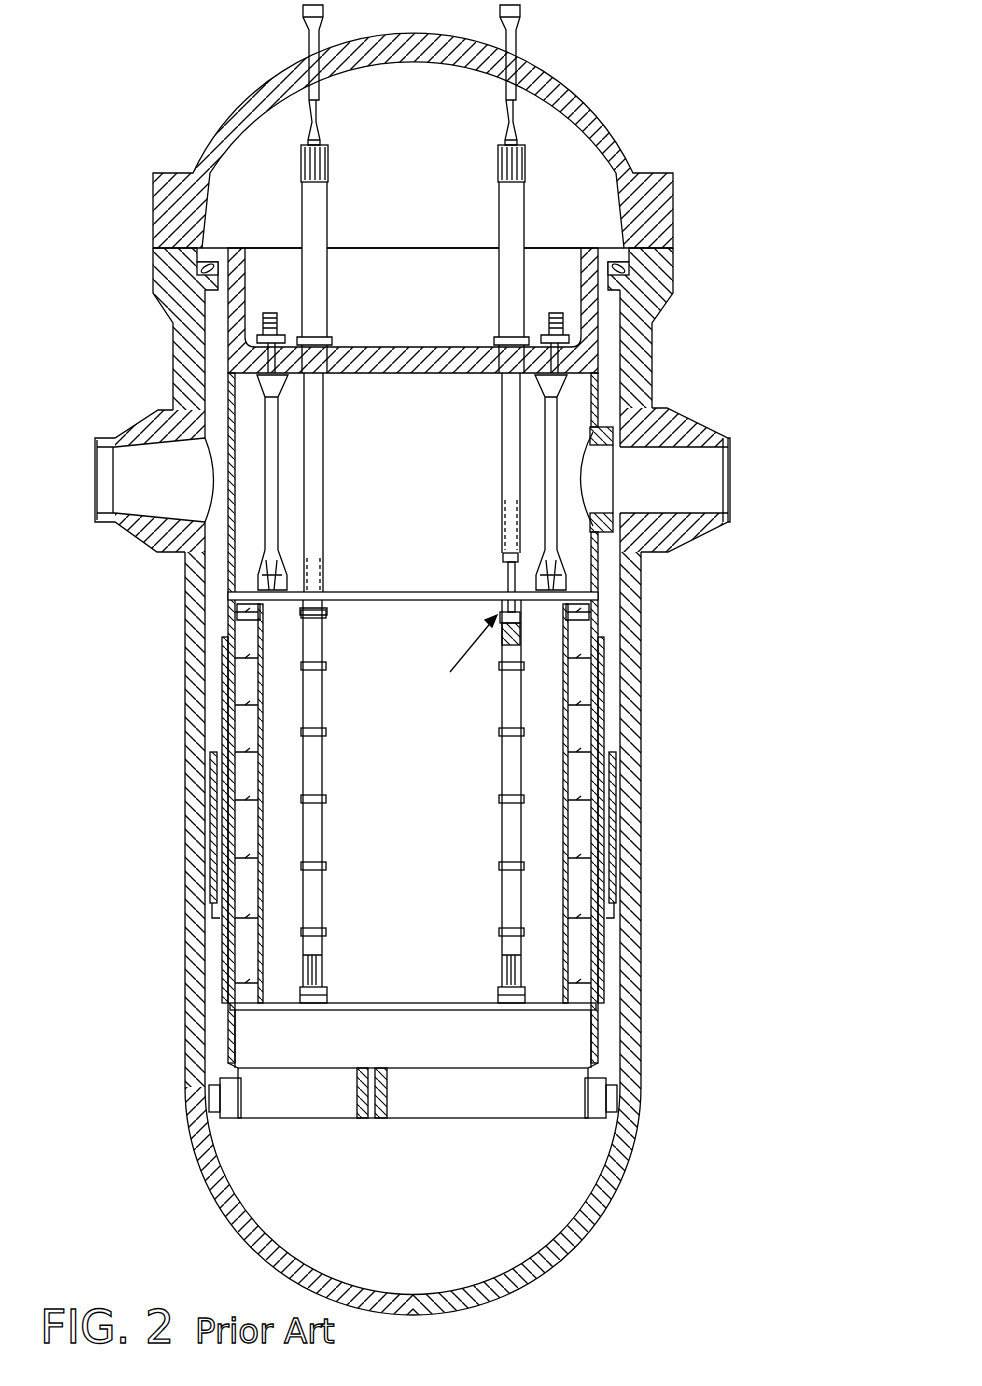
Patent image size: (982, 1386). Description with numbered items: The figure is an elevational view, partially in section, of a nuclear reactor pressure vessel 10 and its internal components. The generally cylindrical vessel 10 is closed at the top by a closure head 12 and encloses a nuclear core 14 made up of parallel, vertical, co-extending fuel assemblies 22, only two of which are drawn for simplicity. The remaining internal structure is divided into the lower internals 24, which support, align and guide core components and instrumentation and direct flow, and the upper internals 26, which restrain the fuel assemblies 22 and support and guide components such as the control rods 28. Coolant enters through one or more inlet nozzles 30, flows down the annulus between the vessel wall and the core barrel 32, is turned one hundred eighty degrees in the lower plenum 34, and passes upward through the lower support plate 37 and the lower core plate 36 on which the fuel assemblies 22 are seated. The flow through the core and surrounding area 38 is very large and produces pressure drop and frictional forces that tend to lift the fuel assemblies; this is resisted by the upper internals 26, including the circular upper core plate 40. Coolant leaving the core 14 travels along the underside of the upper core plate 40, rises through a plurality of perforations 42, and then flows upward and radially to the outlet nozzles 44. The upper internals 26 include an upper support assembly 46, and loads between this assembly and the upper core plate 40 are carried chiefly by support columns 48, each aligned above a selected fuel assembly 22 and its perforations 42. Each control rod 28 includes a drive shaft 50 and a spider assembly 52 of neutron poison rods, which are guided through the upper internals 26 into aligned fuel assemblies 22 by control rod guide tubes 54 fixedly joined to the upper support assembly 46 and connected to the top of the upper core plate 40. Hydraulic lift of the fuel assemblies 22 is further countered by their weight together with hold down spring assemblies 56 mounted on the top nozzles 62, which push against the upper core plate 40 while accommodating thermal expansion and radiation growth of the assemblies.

The reactor pressure vessel 10 is at (640, 670).
The closure head 12 is at (673, 213).
The nuclear core 14 is at (430, 795).
The fuel assemblies 22 is at (325, 702).
The lower internals 24 is at (430, 1053).
The upper internals 26 is at (432, 457).
The control rods 28 is at (505, 597).
The inlet nozzles 30 is at (132, 422).
The core barrel 32 is at (227, 588).
The lower plenum 34 is at (582, 1175).
The lower core plate 36 is at (473, 1003).
The lower support plate 37 is at (453, 1107).
The core and surrounding area 38 is at (470, 775).
The upper core plate 40 is at (402, 600).
The perforations 42 is at (370, 590).
The outlet nozzles 44 is at (690, 430).
The upper support assembly 46 is at (585, 248).
The support columns 48 is at (278, 477).
The drive shaft 50 is at (503, 560).
The spider assembly 52 is at (490, 608).
The control rod guide tubes 54 is at (323, 420).
The hold down spring assemblies 56 is at (522, 627).
The top nozzles 62 is at (457, 650).